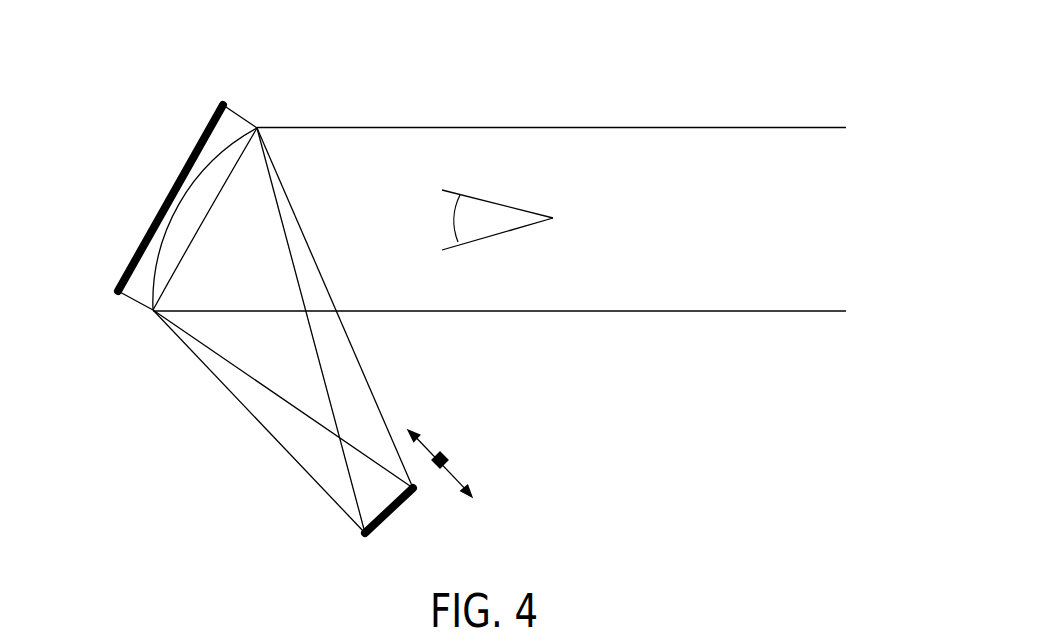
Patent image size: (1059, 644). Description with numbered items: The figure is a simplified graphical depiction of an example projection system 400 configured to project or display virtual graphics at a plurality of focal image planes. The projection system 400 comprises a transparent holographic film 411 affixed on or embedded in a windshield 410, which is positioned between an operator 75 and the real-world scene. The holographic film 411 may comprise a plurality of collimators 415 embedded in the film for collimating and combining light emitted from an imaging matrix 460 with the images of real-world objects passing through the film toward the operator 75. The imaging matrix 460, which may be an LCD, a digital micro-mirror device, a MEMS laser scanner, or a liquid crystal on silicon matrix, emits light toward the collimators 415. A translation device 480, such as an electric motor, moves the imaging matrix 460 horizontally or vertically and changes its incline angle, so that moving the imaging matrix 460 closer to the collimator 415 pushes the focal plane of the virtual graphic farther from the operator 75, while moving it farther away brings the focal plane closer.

The projection system 400 is at (137, 74).
The windshield 410 is at (166, 169).
The holographic film 411 is at (203, 141).
The collimator 415 is at (150, 277).
The operator 75 is at (520, 228).
The imaging matrix 460 is at (397, 520).
The translation device 480 is at (447, 453).